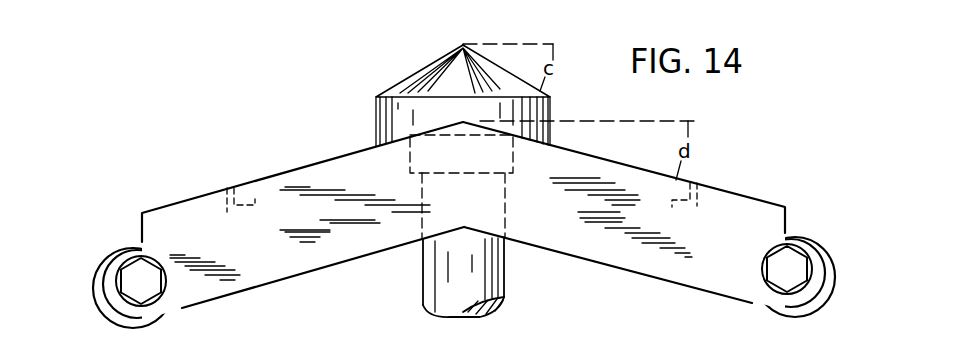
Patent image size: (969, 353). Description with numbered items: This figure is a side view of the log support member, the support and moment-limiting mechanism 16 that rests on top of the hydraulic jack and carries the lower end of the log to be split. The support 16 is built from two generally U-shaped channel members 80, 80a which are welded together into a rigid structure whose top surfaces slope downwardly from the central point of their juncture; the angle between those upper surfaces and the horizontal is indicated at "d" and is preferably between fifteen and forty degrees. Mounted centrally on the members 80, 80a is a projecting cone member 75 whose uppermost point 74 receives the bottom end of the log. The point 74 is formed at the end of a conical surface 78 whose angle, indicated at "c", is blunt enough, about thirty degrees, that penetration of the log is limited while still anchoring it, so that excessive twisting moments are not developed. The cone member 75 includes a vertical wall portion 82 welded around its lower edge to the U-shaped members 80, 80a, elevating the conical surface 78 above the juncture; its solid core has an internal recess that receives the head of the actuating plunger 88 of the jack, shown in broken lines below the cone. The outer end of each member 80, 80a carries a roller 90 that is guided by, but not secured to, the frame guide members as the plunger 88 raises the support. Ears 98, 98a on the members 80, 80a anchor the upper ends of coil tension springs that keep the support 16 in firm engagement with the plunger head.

The support and moment-limiting mechanism 16 is at (170, 157).
The uppermost point 74 is at (463, 45).
The cone member 75 is at (358, 87).
The conical surface 78 is at (406, 86).
The U-shaped channel member 80 is at (292, 180).
The U-shaped channel member 80a is at (736, 207).
The vertical wall portion 82 is at (375, 116).
The actuating plunger 88 is at (432, 273).
The roller 90 is at (97, 267).
The ear 98 is at (228, 213).
The ear 98a is at (681, 208).